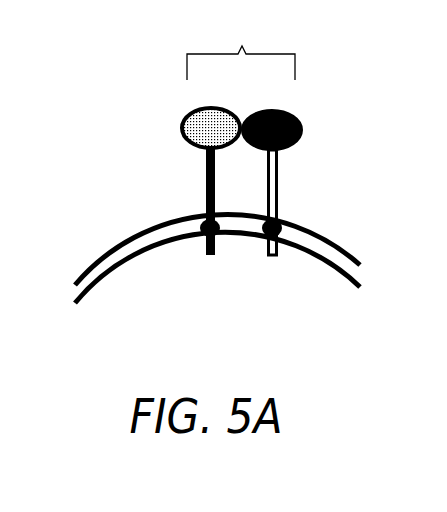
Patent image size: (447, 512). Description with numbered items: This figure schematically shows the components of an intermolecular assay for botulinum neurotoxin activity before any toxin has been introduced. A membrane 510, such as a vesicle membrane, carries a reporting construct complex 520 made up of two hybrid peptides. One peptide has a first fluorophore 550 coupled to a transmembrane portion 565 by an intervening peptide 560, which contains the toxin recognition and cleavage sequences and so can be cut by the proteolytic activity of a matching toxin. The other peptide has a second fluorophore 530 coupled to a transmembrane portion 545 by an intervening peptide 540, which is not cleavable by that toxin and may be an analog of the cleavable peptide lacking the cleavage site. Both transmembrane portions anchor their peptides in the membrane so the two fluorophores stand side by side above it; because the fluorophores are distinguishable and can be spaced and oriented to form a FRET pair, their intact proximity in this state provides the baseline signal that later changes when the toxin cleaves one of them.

The membrane 510 is at (110, 253).
The reporting construct complex 520 is at (242, 46).
The second fluorophore 530 is at (182, 123).
The intervening peptide 540 is at (205, 188).
The transmembrane portion 545 is at (200, 220).
The first fluorophore 550 is at (299, 123).
The intervening peptide 560 is at (279, 188).
The transmembrane portion 565 is at (283, 222).